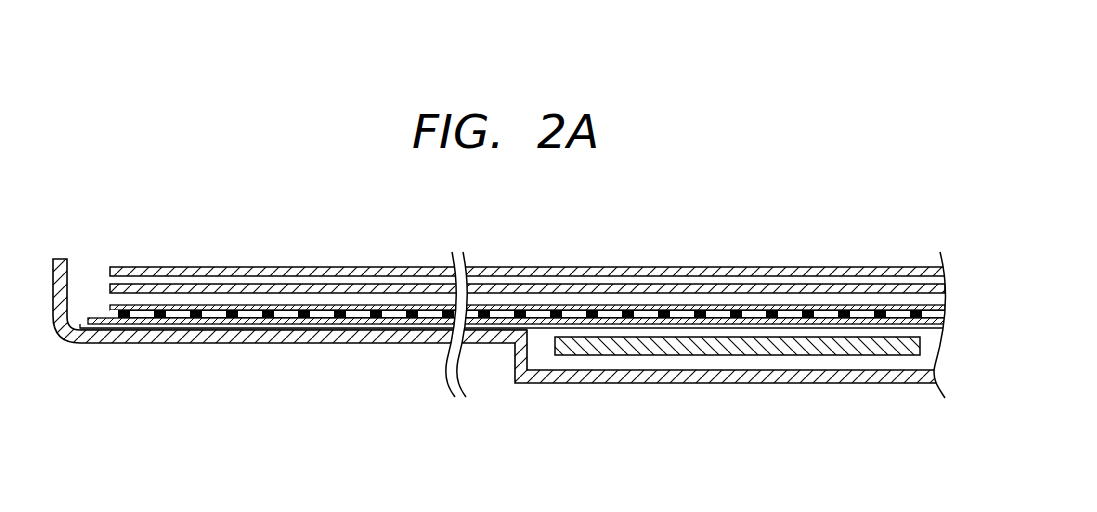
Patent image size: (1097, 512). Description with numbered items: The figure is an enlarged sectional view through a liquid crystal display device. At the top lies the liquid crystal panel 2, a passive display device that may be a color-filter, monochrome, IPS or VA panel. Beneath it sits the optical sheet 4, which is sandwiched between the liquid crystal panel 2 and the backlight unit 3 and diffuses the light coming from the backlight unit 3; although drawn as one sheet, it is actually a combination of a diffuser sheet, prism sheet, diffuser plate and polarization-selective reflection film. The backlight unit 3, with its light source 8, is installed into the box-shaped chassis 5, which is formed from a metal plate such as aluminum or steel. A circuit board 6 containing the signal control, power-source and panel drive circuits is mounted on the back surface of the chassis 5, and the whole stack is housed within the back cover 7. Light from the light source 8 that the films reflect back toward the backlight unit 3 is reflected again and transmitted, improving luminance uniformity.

The liquid crystal panel 2 is at (745, 273).
The backlight unit 3 is at (212, 321).
The optical sheet 4 is at (622, 288).
The chassis 5 is at (263, 328).
The circuit board 6 is at (840, 351).
The back cover 7 is at (404, 343).
The light source 8 is at (333, 325).